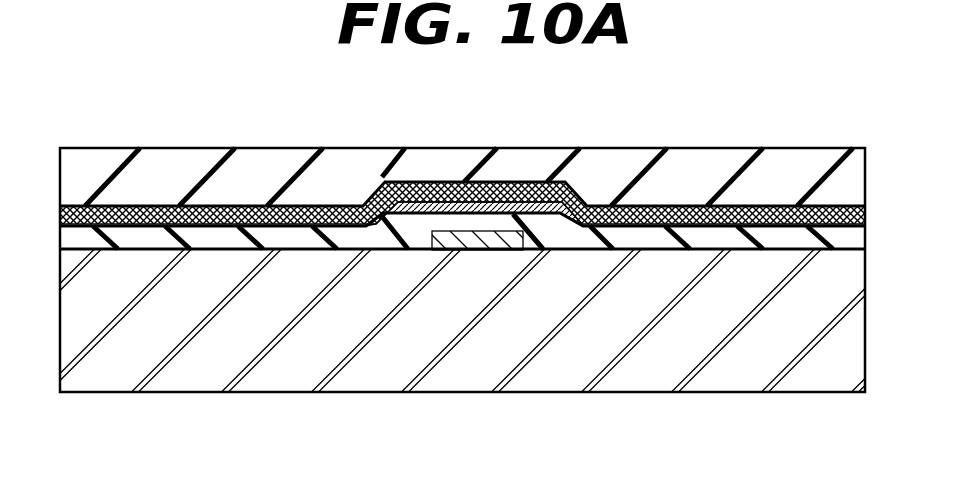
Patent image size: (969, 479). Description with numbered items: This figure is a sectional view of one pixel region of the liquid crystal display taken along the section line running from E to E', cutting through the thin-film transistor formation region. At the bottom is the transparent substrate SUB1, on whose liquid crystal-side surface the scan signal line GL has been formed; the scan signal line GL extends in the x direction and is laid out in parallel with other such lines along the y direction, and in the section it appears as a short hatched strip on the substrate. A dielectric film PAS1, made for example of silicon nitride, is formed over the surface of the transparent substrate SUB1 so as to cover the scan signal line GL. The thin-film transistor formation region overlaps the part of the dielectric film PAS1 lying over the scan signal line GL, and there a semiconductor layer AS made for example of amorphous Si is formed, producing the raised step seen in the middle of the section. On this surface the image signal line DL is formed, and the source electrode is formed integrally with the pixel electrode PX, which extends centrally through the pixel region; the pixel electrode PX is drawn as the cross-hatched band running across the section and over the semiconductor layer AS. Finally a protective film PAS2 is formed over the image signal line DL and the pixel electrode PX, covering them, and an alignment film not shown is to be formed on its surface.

The transparent substrate SUB1 is at (484, 270).
The scan signal line GL is at (475, 236).
The semiconductor layer AS is at (412, 200).
The dielectric film PAS1 is at (655, 240).
The protective film PAS2 is at (707, 160).
The pixel electrode PX is at (462, 168).
The image signal line DL is at (120, 205).
The section line end E is at (46, 308).
The section line end E' is at (882, 309).